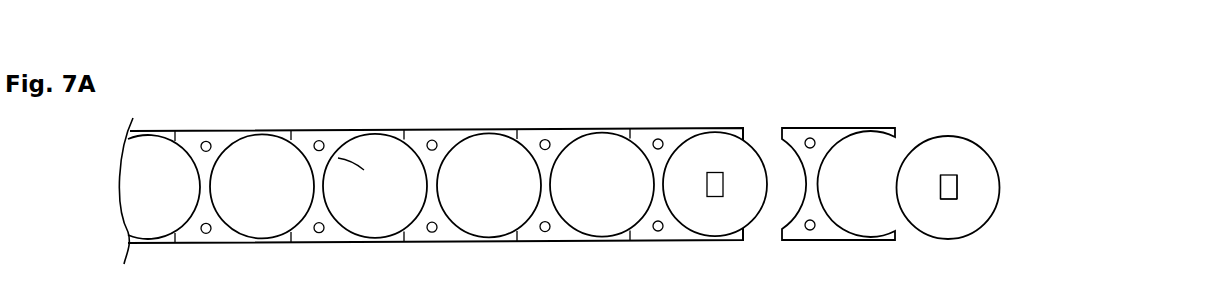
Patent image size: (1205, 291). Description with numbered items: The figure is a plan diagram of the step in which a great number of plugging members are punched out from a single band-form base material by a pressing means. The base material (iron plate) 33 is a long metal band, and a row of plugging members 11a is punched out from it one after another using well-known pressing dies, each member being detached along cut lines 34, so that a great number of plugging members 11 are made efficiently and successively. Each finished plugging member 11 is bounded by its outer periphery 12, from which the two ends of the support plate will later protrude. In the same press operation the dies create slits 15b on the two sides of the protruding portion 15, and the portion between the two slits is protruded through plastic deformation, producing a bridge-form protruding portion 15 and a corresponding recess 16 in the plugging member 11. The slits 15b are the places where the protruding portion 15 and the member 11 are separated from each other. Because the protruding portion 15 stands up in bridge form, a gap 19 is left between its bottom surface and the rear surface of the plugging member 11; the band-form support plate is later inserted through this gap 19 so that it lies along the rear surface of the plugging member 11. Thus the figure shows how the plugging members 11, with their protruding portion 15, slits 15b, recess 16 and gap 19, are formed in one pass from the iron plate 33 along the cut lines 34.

The plugging member 11 is at (688, 160).
The plugging members punched out 11a is at (292, 136).
The outer periphery 12 is at (235, 144).
The protruding portion 15 is at (950, 190).
The slit 15b is at (941, 188).
The recess 16 is at (713, 172).
The gap 19 is at (957, 184).
The base material 33 is at (332, 142).
The cut line 34 is at (735, 148).